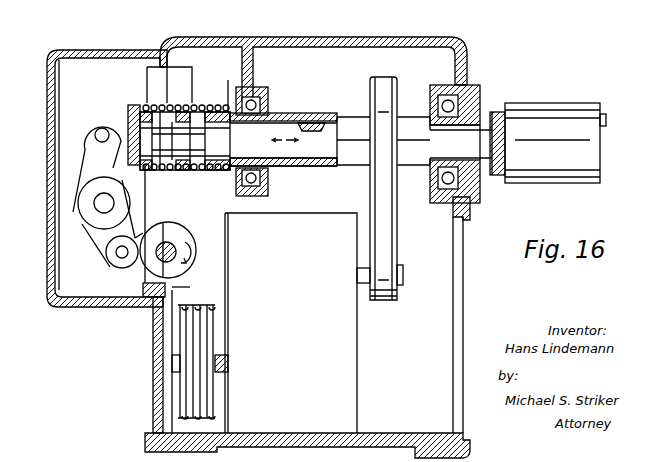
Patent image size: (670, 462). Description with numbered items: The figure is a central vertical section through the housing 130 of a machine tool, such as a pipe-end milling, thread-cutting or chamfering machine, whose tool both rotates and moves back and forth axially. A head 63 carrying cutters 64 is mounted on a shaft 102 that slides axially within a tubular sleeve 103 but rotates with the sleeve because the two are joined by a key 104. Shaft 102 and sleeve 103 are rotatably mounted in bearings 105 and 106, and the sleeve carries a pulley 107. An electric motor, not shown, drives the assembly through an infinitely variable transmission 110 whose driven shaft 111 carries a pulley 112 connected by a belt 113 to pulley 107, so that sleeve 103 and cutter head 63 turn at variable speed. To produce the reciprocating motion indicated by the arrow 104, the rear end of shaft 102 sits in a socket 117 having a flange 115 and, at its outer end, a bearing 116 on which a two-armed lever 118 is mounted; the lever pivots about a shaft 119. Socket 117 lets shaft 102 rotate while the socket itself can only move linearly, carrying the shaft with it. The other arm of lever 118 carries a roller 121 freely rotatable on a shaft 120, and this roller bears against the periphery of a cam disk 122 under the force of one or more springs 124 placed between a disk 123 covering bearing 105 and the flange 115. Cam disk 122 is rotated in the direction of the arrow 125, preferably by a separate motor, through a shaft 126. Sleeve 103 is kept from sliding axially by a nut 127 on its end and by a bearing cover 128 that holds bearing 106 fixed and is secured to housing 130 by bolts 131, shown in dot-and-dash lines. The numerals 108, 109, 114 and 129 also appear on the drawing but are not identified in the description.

The head 63 is at (549, 115).
The cutters 64 is at (598, 124).
The shaft 102 is at (488, 130).
The tubular sleeve 103 is at (282, 112).
The key 104 is at (310, 130).
The bearing 105 is at (262, 95).
The bearing 106 is at (445, 97).
The pulley 107 is at (370, 98).
The disc stack 108 is at (205, 320).
The disc shaft 109 is at (223, 362).
The infinitely variable transmission 110 is at (357, 355).
The driven shaft 111 is at (357, 275).
The pulley 112 is at (399, 270).
The belt 113 is at (388, 226).
The sleeve lower part 114 is at (288, 168).
The flange 115 is at (133, 105).
The bearing 116 is at (101, 128).
The socket 117 is at (185, 141).
The two-armed lever 118 is at (88, 160).
The shaft 119 is at (100, 206).
The shaft 120 is at (120, 256).
The roller 121 is at (132, 240).
The cam disk 122 is at (176, 234).
The disk 123 is at (228, 101).
The springs 124 is at (172, 106).
The arrow 125 is at (190, 252).
The shaft 126 is at (156, 262).
The nut 127 is at (472, 193).
The bearing cover 128 is at (474, 78).
The side cover 129 is at (113, 56).
The housing 130 is at (158, 384).
The bolts 131 is at (172, 68).